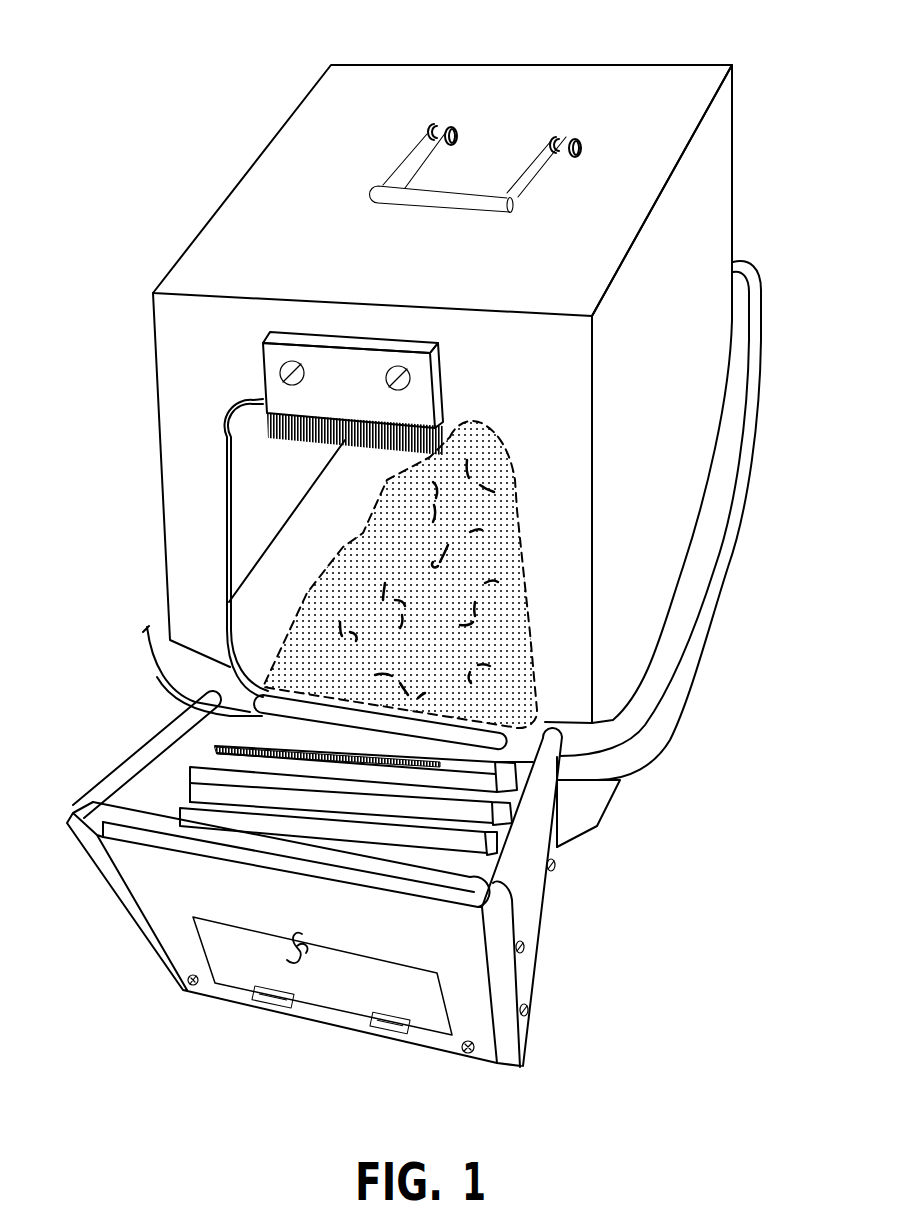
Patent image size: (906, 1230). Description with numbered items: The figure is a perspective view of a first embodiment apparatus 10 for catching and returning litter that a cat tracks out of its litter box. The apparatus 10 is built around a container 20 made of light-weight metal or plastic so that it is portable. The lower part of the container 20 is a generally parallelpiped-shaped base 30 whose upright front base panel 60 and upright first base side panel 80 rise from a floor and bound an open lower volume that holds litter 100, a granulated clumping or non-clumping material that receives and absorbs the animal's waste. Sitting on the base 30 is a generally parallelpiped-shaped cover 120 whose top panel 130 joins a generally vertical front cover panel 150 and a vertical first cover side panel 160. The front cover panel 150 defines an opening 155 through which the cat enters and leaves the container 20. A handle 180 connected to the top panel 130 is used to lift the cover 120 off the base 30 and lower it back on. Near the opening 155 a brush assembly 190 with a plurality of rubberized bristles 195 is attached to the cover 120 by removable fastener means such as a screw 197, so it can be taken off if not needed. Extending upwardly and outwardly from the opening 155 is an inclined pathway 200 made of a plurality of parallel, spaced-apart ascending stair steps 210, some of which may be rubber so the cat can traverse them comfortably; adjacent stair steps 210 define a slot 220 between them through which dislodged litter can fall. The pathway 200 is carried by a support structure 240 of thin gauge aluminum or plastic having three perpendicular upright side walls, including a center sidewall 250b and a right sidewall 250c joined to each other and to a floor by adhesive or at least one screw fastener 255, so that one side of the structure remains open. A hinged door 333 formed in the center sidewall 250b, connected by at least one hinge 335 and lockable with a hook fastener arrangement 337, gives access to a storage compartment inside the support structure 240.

The first embodiment apparatus 10 is at (128, 78).
The container 20 is at (218, 195).
The base 30 is at (622, 815).
The front base panel 60 is at (557, 847).
The first base side panel 80 is at (610, 791).
The litter 100 is at (480, 516).
The cover 120 is at (163, 320).
The top panel 130 is at (312, 116).
The front cover panel 150 is at (558, 375).
The opening 155 is at (523, 565).
The first cover side panel 160 is at (722, 185).
The handle 180 is at (545, 173).
The brush assembly 190 is at (452, 376).
The rubberized bristles 195 is at (413, 443).
The screw 197 is at (280, 368).
The pathway 200 is at (200, 732).
The stair steps 210 is at (186, 780).
The slot 220 is at (166, 802).
The support structure 240 is at (150, 986).
The center sidewall 250b is at (207, 980).
The right sidewall 250c is at (530, 913).
The screw fastener 255 is at (527, 947).
The hinged door 333 is at (333, 998).
The hinge 335 is at (398, 1036).
The hook fastener arrangement 337 is at (330, 946).